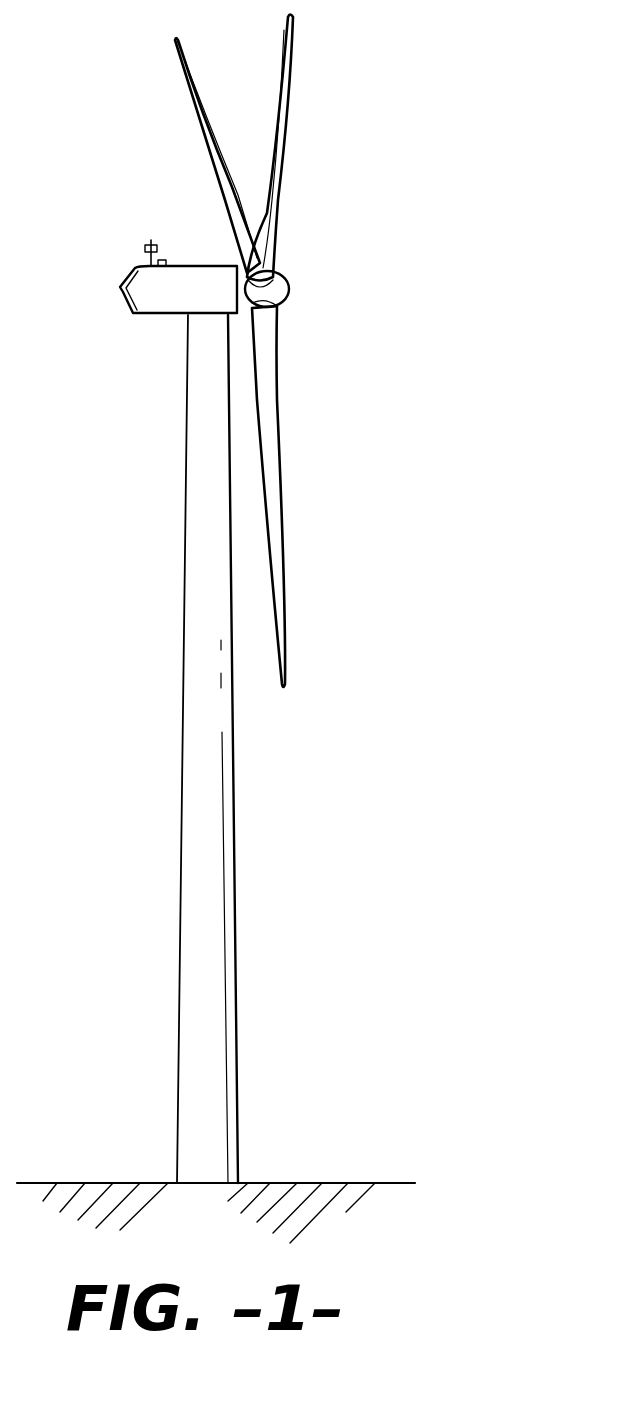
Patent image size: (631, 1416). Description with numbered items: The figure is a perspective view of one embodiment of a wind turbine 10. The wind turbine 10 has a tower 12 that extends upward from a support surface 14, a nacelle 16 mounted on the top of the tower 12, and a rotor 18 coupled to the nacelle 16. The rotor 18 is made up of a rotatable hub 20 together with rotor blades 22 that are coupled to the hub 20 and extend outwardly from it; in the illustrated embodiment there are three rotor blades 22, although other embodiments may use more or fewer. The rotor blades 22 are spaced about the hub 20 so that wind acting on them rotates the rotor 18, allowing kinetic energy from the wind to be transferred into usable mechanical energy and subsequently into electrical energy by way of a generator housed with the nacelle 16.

The wind turbine 10 is at (405, 123).
The tower 12 is at (195, 868).
The support surface 14 is at (310, 1183).
The nacelle 16 is at (163, 315).
The rotor 18 is at (250, 351).
The rotatable hub 20 is at (292, 290).
The rotor blade 22 is at (198, 123).